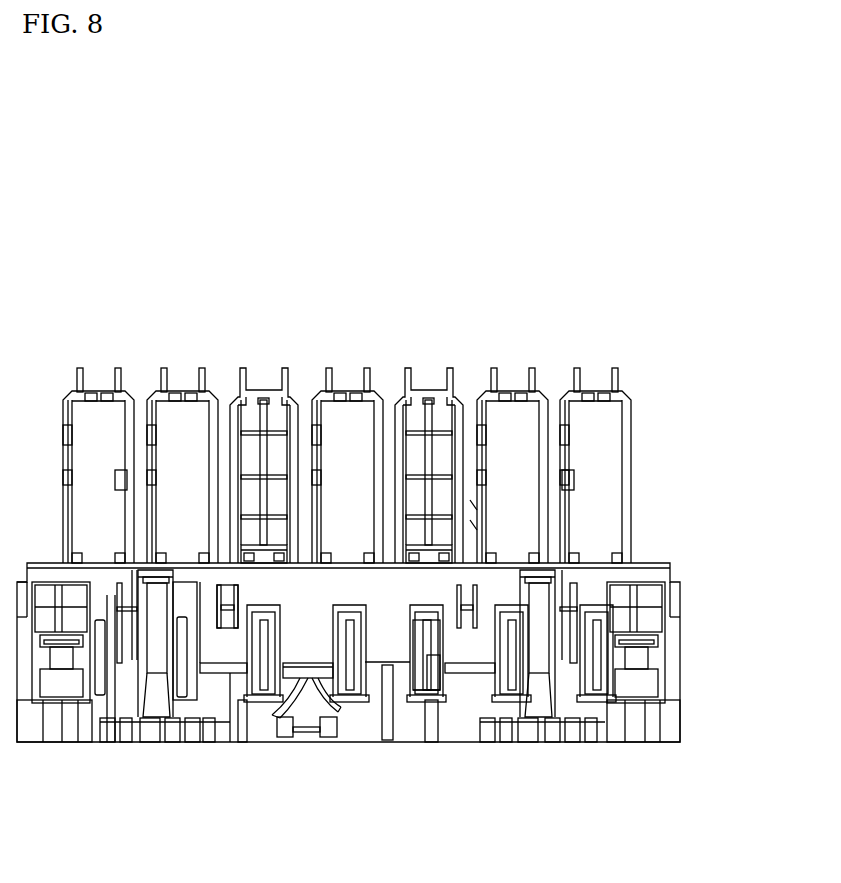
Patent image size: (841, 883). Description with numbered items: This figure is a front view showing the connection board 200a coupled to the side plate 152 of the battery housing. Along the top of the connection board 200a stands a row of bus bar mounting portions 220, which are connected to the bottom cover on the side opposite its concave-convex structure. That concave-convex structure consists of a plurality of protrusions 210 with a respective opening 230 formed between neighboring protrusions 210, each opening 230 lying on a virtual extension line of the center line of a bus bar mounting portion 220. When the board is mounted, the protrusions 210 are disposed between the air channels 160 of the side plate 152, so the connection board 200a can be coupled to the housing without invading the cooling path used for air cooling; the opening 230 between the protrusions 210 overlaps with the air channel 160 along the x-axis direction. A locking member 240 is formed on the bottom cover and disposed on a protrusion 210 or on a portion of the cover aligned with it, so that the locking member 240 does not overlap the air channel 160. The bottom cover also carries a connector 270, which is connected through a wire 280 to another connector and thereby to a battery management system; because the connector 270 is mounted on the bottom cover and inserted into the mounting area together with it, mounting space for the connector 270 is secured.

The connection board 200a is at (645, 455).
The bus bar mounting portion 220 is at (277, 408).
The locking member 240 is at (227, 640).
The side plate 152 is at (243, 717).
The connector 270 is at (293, 680).
The wire 280 is at (320, 703).
The protrusion 210 is at (383, 648).
The opening 230 is at (434, 672).
The air channel 160 is at (439, 686).